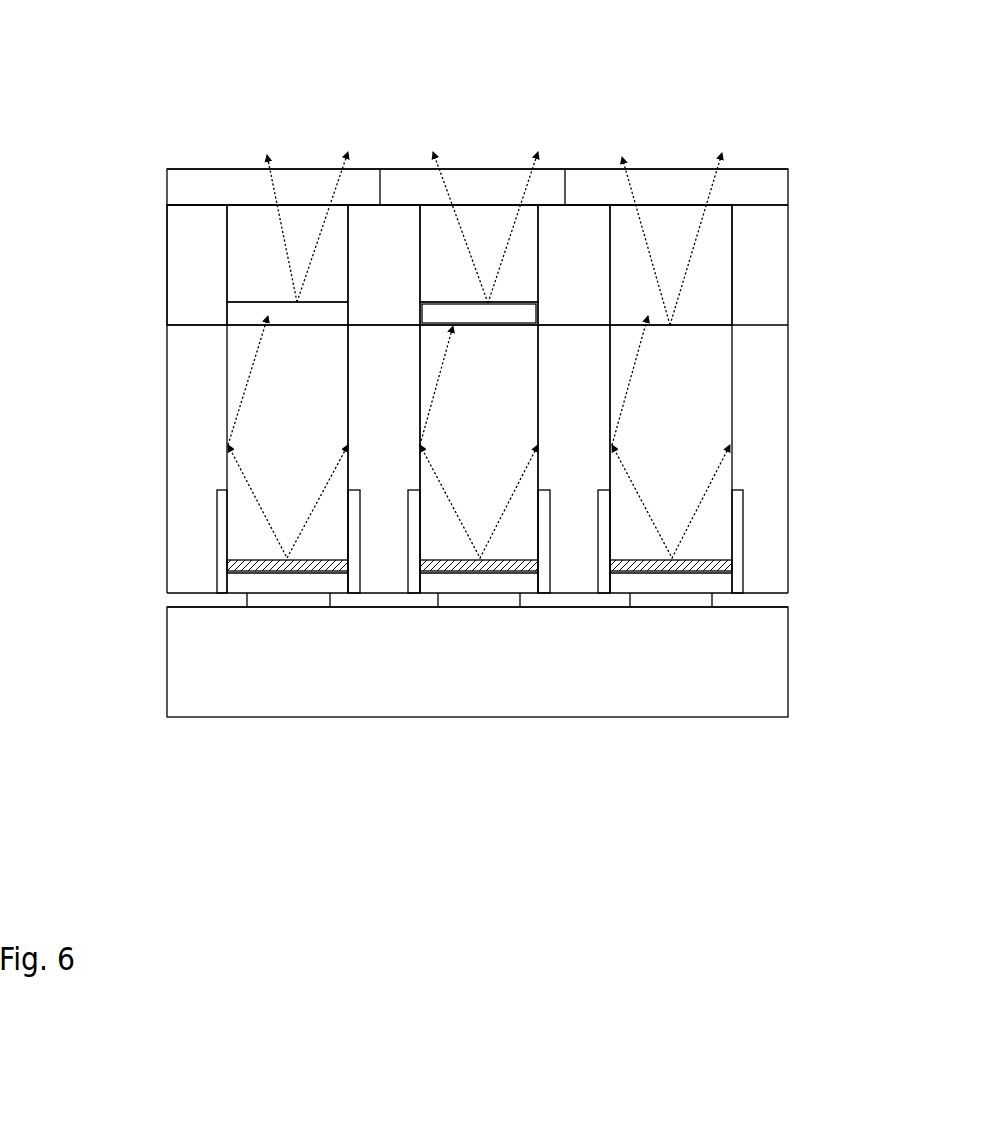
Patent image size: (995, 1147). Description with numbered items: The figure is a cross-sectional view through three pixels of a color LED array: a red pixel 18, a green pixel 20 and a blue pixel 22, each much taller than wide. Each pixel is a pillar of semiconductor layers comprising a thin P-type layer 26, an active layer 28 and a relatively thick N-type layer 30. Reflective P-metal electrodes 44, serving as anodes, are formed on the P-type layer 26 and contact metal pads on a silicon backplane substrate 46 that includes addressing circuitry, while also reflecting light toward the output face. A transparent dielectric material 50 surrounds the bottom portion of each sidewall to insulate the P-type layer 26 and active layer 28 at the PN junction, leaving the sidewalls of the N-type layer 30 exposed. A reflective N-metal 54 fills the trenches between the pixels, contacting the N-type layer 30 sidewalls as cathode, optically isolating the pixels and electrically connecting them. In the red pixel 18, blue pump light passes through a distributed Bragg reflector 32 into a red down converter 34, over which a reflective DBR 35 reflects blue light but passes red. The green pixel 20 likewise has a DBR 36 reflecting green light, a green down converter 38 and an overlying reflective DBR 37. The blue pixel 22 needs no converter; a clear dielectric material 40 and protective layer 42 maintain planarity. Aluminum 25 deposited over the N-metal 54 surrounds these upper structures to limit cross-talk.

The red pixel 18 is at (485, 112).
The green pixel 20 is at (295, 112).
The blue pixel 22 is at (670, 112).
The aluminum 25 is at (778, 235).
The P-type layer 26 is at (625, 623).
The active layer 28 is at (718, 623).
The N-type layer 30 is at (275, 491).
The distributed Bragg reflector 32 is at (542, 305).
The red down converter 34 is at (425, 210).
The reflective DBR 35 is at (553, 180).
The DBR 36 is at (333, 313).
The reflective DBR 37 is at (368, 180).
The green down converter 38 is at (240, 210).
The clear dielectric material 40 is at (618, 210).
The protective layer 42 is at (752, 180).
The reflective P-metal electrode 44 is at (677, 623).
The backplane substrate 46 is at (778, 688).
The transparent dielectric material 50 is at (737, 597).
The reflective N-metal 54 is at (778, 362).